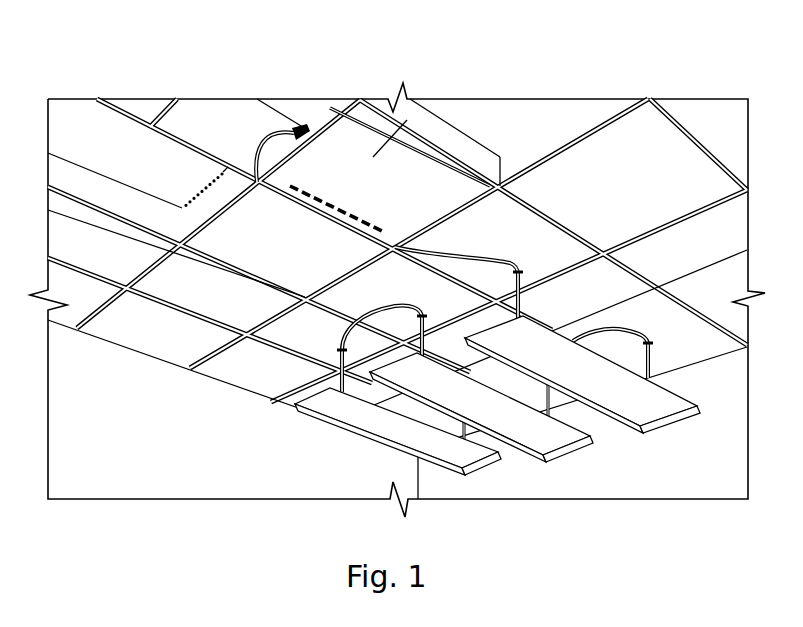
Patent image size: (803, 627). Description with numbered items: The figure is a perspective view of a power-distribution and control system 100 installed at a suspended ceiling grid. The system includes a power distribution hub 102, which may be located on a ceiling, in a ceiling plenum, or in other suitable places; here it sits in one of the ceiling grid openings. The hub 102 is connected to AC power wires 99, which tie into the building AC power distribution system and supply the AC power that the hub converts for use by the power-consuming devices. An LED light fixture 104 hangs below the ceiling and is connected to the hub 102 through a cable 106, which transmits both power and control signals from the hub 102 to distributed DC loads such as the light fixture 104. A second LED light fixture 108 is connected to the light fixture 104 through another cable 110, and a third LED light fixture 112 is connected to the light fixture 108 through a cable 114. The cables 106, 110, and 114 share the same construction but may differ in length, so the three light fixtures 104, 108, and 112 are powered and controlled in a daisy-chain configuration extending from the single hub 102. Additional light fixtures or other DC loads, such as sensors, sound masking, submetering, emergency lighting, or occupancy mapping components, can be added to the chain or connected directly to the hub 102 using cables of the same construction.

The power-distribution and control system 100 is at (111, 48).
The AC power wires 99 is at (299, 129).
The power distribution hub 102 is at (340, 192).
The LED light fixture 104 is at (663, 415).
The cable 106 is at (455, 255).
The LED light fixture 108 is at (542, 432).
The cable 110 is at (603, 330).
The LED light fixture 112 is at (365, 427).
The cable 114 is at (392, 306).